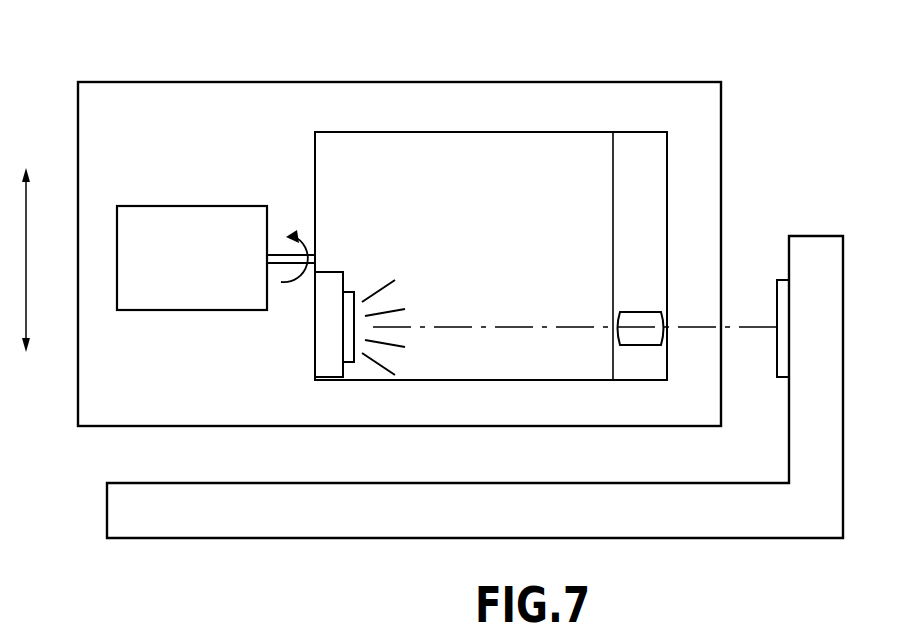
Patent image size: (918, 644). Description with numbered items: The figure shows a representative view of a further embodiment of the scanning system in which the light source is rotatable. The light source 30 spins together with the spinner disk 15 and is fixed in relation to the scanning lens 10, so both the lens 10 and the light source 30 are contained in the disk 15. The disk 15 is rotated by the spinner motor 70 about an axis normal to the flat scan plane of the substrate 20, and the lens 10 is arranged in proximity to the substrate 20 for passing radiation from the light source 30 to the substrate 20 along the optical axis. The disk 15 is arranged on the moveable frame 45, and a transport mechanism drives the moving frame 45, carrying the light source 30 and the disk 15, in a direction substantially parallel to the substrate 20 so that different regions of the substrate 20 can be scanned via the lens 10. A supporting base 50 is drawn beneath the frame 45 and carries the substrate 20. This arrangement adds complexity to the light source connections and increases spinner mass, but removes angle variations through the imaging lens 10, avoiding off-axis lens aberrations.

The moving frame 45 is at (245, 93).
The spinner 15 is at (560, 140).
The spinner motor 70 is at (138, 210).
The light source 30 is at (350, 330).
The scanning lens 10 is at (631, 338).
The substrate 20 is at (777, 282).
The support frame 50 is at (311, 519).